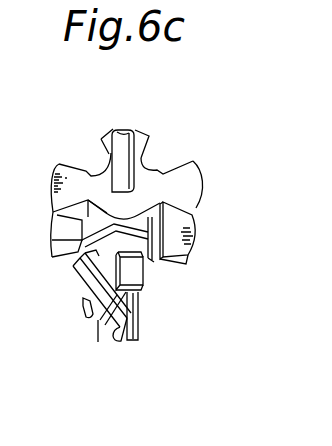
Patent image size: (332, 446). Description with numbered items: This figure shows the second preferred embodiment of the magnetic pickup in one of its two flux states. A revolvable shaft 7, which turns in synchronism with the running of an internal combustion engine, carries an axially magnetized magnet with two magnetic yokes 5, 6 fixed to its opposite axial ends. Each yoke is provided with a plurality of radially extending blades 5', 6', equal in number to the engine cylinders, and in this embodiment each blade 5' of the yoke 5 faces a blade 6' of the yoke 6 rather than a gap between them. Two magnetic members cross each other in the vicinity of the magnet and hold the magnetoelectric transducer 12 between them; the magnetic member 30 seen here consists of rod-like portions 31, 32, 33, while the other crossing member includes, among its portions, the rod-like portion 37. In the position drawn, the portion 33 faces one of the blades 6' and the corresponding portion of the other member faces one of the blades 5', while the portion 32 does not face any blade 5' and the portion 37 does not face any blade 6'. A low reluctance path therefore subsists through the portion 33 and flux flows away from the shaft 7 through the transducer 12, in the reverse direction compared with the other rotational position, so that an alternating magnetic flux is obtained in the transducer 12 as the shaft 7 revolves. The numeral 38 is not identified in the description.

The magnetic yoke 5 is at (126, 170).
The blades 5' is at (133, 161).
The magnetic yoke 6 is at (173, 271).
The blades 6' is at (197, 233).
The revolvable shaft 7 is at (125, 130).
The magnetoelectric transducer 12 is at (72, 276).
The magnetic member 30 is at (80, 290).
The rod-like portion 31 is at (98, 333).
The rod-like portion 32 is at (57, 238).
The rod-like portion 33 is at (139, 310).
The rod-like portion 37 is at (80, 313).
The stop 38 is at (151, 263).